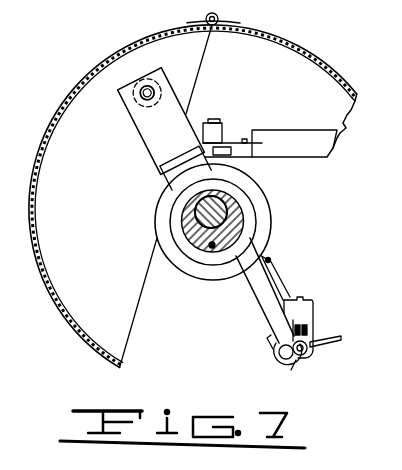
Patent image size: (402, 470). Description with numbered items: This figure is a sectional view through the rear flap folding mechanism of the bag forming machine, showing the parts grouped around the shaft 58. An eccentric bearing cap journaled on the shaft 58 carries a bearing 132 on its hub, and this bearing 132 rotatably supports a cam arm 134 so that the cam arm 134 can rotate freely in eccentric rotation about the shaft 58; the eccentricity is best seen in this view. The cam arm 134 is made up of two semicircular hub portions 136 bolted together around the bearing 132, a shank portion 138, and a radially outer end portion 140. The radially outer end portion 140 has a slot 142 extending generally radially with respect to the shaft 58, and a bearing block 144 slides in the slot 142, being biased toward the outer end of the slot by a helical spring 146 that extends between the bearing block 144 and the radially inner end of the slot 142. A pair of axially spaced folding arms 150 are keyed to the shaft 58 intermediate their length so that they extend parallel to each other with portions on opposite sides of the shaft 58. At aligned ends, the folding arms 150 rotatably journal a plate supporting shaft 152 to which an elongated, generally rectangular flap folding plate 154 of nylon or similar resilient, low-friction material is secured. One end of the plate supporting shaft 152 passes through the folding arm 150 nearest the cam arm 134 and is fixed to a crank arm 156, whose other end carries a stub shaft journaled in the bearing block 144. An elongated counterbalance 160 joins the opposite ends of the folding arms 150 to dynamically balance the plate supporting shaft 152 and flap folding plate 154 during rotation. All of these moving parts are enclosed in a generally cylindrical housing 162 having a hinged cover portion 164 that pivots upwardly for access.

The shaft 58 is at (196, 212).
The bearing 132 is at (178, 232).
The cam arm 134 is at (271, 258).
The semicircular hub portions 136 is at (203, 272).
The shank portion 138 is at (271, 285).
The radially outer end portion 140 is at (309, 302).
The slot 142 is at (311, 332).
The bearing block 144 is at (312, 357).
The helical spring 146 is at (312, 320).
The folding arms 150 is at (180, 112).
The plate supporting shaft 152 is at (291, 370).
The flap folding plate 154 is at (333, 348).
The crank arm 156 is at (283, 360).
The counterbalance 160 is at (145, 108).
The housing 162 is at (288, 31).
The hinged cover portion 164 is at (101, 225).